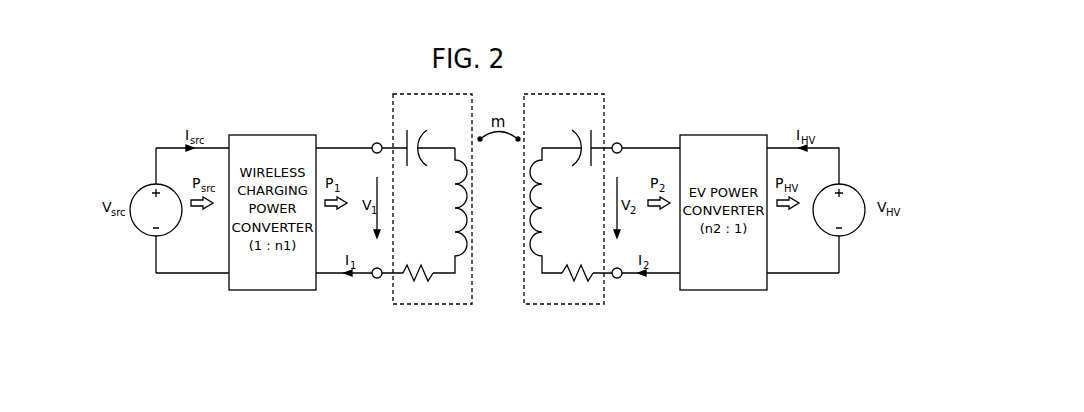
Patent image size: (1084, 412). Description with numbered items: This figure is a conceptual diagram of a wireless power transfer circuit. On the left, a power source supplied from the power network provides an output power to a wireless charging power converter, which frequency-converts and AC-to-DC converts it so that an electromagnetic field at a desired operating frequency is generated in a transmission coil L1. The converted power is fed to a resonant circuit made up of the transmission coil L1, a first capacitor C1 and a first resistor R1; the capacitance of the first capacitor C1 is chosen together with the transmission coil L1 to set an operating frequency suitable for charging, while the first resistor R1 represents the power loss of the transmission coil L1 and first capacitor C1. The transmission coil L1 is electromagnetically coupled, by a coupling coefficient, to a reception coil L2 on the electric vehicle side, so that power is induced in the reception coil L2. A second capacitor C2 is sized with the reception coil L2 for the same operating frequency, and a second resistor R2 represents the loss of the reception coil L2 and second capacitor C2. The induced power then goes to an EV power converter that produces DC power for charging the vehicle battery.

The first capacitor C1 is at (431, 137).
The transmission coil L1 is at (450, 210).
The first resistor R1 is at (418, 262).
The second capacitor C2 is at (566, 137).
The reception coil L2 is at (546, 210).
The second resistor R2 is at (577, 262).